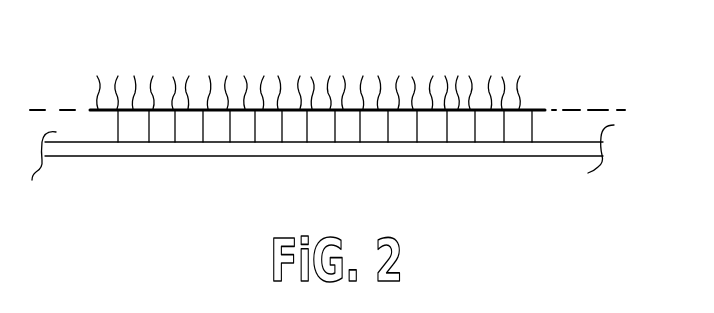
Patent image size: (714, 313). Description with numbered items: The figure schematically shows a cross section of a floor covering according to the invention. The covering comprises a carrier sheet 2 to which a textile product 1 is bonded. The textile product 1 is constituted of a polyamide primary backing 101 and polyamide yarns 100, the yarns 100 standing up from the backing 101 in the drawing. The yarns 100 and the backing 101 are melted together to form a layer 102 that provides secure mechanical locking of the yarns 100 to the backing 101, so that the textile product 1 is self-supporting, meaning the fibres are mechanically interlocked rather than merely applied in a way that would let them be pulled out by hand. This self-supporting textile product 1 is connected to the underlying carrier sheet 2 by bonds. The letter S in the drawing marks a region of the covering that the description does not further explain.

The textile product 1 is at (533, 60).
The carrier sheet 2 is at (358, 156).
The polyamide yarns 100 is at (173, 77).
The polyamide primary backing 101 is at (590, 105).
The layer 102 is at (186, 113).
The spacing between posts S is at (447, 127).